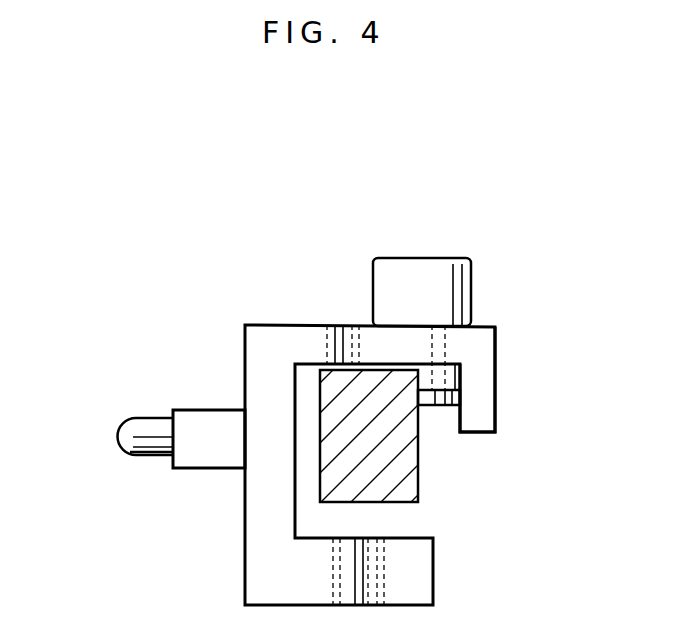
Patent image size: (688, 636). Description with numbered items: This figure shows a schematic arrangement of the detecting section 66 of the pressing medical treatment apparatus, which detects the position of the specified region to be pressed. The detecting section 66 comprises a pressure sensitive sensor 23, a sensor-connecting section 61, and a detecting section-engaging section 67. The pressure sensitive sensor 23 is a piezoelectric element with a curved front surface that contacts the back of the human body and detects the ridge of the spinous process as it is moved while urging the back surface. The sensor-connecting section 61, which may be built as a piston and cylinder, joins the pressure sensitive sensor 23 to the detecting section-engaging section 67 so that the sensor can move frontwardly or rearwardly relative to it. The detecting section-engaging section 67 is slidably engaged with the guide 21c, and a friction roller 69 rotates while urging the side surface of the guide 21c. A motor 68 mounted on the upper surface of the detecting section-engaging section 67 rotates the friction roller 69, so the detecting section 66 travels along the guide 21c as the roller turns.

The detecting section 66 is at (198, 265).
The motor 68 is at (435, 266).
The detecting section-engaging section 67 is at (495, 375).
The friction roller 69 is at (430, 406).
The guide 21c is at (410, 478).
The sensor-connecting section 61 is at (202, 470).
The pressure sensitive sensor 23 is at (120, 453).